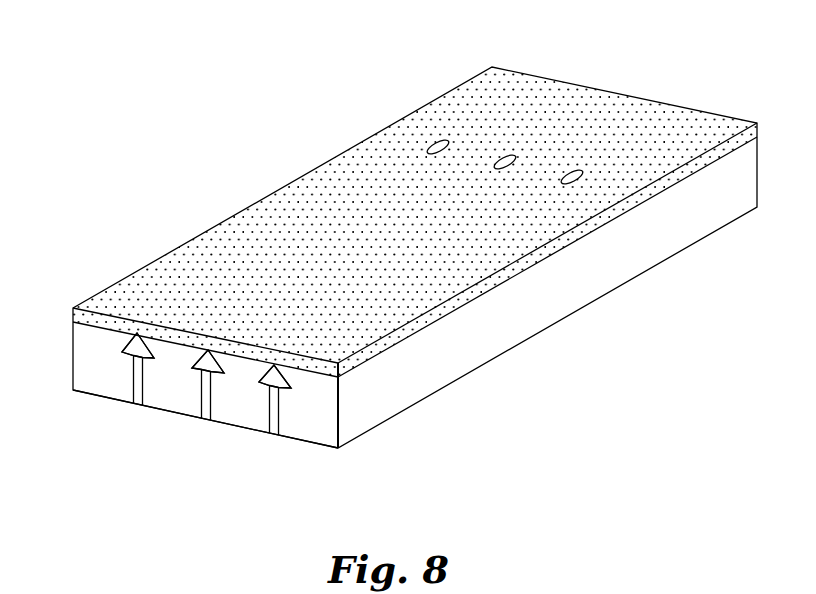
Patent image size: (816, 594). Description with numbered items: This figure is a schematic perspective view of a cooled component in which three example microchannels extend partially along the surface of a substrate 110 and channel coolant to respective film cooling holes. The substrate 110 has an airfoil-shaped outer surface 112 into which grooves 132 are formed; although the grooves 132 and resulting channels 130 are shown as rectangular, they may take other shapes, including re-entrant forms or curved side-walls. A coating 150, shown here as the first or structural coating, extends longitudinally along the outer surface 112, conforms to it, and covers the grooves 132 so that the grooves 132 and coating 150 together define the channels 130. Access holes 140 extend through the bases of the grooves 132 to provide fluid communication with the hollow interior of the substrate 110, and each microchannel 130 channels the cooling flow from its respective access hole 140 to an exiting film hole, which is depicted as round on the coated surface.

The substrate 110 is at (687, 223).
The airfoil-shaped outer surface 112 is at (350, 375).
The coating 150 is at (580, 93).
The access hole 140 is at (272, 434).
The channel 130 is at (128, 356).
The groove 132 is at (258, 382).